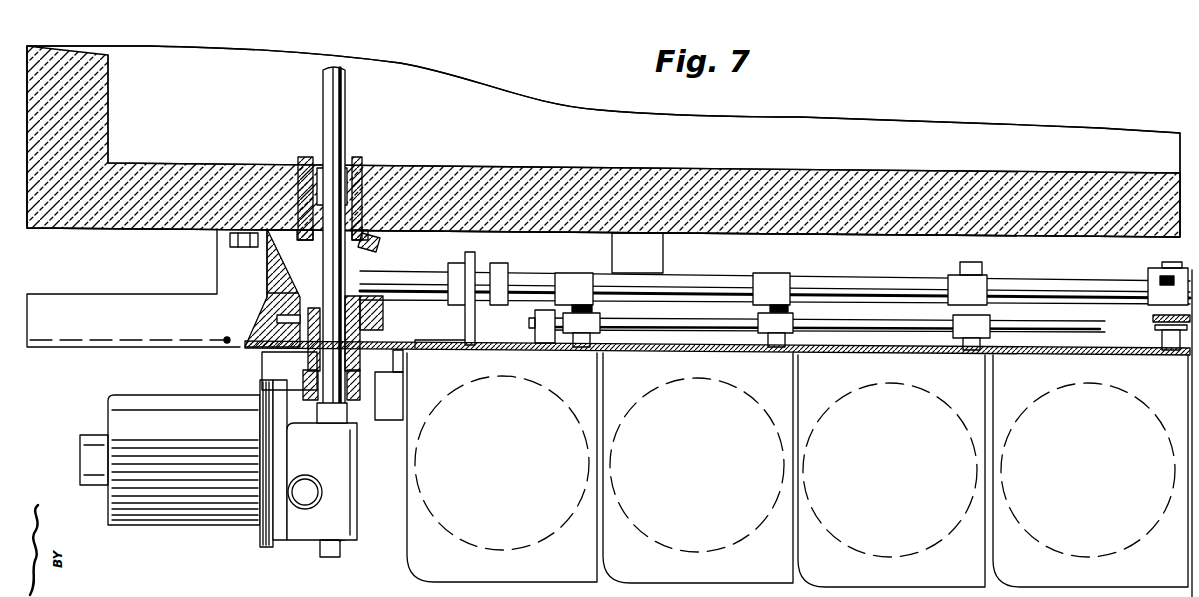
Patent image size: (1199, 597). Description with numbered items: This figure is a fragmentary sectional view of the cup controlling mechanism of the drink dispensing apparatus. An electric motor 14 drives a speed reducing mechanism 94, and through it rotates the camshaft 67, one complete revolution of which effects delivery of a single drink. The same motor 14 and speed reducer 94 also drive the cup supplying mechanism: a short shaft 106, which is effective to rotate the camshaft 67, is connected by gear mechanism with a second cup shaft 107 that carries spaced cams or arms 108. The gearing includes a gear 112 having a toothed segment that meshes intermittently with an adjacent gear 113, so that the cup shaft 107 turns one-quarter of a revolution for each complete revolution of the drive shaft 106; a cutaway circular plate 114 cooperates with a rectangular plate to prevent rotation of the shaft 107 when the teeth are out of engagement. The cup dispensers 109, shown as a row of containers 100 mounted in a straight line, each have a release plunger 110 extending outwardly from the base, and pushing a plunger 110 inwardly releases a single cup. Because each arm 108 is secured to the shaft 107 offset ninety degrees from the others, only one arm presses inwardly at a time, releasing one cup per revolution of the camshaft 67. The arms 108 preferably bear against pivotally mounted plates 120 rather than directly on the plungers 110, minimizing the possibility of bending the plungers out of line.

The electric motor 14 is at (160, 522).
The camshaft 67 is at (347, 104).
The speed reducing mechanism 94 is at (308, 525).
The container 100 is at (993, 471).
The short shaft 106 is at (323, 268).
The cup shaft 107 is at (893, 272).
The cams or arms 108 is at (575, 275).
The cup dispensers 109 is at (600, 468).
The release plunger 110 is at (614, 350).
The gear 112 is at (262, 313).
The gear 113 is at (380, 256).
The circular cooperating plate 114 is at (372, 338).
The pivotally mounted plates 120 is at (1152, 323).